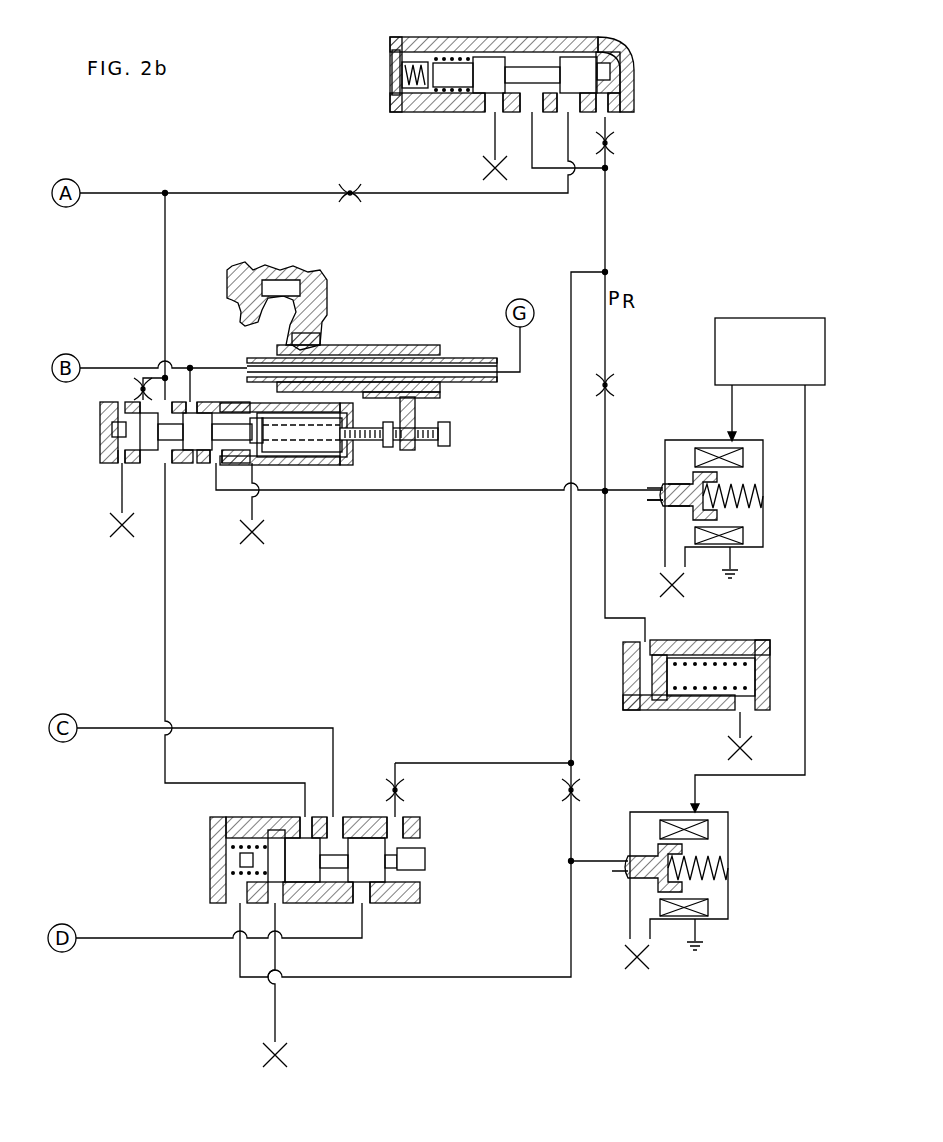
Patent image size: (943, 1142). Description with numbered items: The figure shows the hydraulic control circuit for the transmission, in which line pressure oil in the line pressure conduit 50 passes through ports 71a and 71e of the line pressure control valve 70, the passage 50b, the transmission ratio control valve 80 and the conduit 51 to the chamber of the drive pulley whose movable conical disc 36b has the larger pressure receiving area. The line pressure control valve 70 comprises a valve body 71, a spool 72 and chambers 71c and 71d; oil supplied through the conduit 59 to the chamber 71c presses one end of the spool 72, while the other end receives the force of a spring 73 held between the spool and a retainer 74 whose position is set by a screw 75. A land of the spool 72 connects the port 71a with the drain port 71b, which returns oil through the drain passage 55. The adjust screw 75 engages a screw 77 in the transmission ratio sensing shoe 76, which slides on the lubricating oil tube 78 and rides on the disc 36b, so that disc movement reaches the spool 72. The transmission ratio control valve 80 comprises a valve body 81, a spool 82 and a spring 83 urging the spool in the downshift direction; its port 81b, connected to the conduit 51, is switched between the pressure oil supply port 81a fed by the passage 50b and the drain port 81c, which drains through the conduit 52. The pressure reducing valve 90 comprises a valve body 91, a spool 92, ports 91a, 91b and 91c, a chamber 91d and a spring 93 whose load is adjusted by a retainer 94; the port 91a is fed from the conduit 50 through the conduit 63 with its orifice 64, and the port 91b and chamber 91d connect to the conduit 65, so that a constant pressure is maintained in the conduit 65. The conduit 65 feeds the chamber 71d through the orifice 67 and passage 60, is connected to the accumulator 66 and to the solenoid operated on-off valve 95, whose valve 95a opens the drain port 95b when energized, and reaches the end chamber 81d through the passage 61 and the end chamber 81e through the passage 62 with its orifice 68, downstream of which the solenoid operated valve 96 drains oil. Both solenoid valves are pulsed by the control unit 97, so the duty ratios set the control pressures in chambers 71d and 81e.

The movable conical disc 36b is at (320, 285).
The line pressure conduit 50 is at (128, 192).
The passage 50b is at (168, 700).
The conduit 51 is at (130, 728).
The conduit 52 is at (138, 940).
The drain passage 55 is at (118, 368).
The conduit 59 is at (150, 378).
The passage 60 is at (470, 492).
The passage 61 is at (455, 763).
The passage 62 is at (445, 978).
The conduit 63 is at (406, 197).
The orifice 64 is at (353, 203).
The conduit 65 is at (606, 228).
The accumulator 66 is at (745, 640).
The orifice 67 is at (614, 385).
The orifice 68 is at (565, 792).
The line pressure control valve 70 is at (160, 440).
The valve body 71 is at (108, 432).
The port 71a is at (176, 400).
The drain port 71b is at (205, 402).
The chamber 71c is at (130, 465).
The chamber 71d is at (216, 475).
The port 71e is at (160, 465).
The spool 72 is at (215, 465).
The spring 73 is at (288, 460).
The retainer 74 is at (342, 462).
The screw 75 is at (387, 447).
The transmission ratio sensing shoe 76 is at (408, 312).
The screw 77 is at (450, 435).
The lubricating oil tube 78 is at (465, 358).
The transmission ratio control valve 80 is at (323, 905).
The valve body 81 is at (415, 905).
The pressure oil supply port 81a is at (300, 817).
The port 81b is at (340, 800).
The drain port 81c is at (358, 903).
The end chamber 81d is at (433, 828).
The end chamber 81e is at (225, 862).
The spool 82 is at (375, 905).
The spring 83 is at (215, 838).
The pressure reducing valve 90 is at (546, 122).
The valve body 91 is at (550, 58).
The port 91a is at (565, 128).
The port 91b is at (527, 130).
The port 91c is at (488, 103).
The chamber 91d is at (617, 100).
The spool 92 is at (590, 65).
The spring 93 is at (443, 63).
The retainer 94 is at (402, 58).
The solenoid operated on-off control valve 95 is at (688, 496).
The valve 95a is at (672, 505).
The drain port 95b is at (650, 488).
The solenoid operated on-off control valve 96 is at (728, 912).
The control unit 97 is at (783, 297).